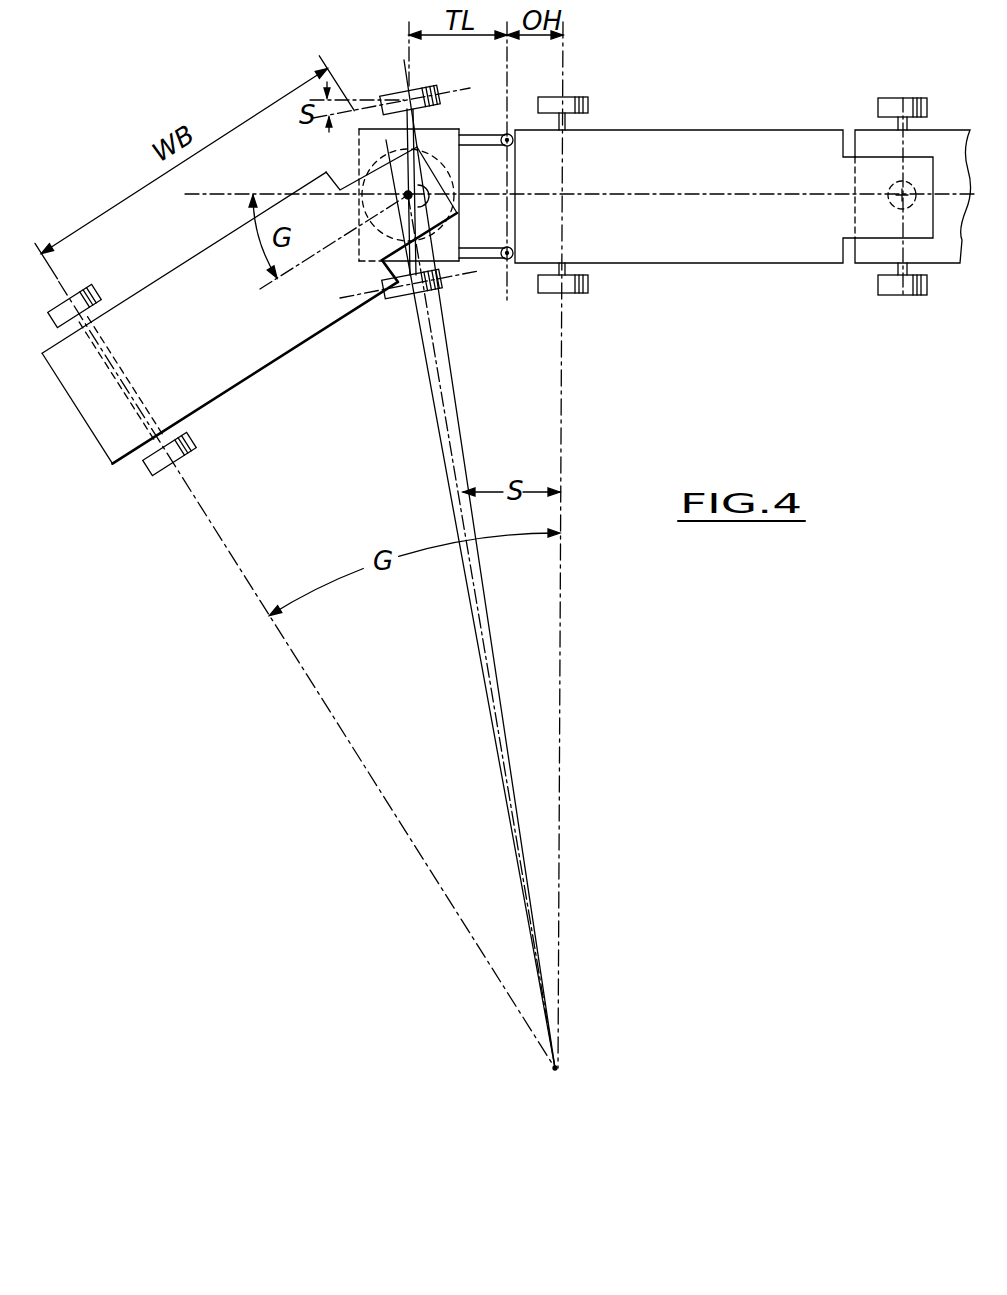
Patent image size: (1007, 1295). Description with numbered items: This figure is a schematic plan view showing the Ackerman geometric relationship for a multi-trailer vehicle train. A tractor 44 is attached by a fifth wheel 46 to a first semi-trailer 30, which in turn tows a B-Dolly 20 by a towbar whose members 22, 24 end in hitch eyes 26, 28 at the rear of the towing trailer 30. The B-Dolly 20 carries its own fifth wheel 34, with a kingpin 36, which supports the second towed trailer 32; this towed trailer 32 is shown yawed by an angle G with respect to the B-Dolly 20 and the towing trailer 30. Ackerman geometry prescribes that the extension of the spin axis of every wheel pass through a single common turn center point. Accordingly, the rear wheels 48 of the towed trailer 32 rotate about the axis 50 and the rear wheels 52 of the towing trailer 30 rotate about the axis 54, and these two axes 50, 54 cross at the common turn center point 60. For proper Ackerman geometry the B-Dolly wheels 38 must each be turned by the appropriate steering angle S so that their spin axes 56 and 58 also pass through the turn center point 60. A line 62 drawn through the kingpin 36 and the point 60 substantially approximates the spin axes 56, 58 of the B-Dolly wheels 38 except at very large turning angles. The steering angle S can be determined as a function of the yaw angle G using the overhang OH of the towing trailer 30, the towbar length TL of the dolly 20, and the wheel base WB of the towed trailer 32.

The B-Dolly 20 is at (448, 128).
The upper tongue bar 22 is at (480, 135).
The lower tongue bar 24 is at (488, 262).
The hitch eye 26 is at (503, 144).
The hitch eye 28 is at (512, 249).
The first semi-trailer 30 is at (760, 130).
The second towed trailer 32 is at (263, 370).
The fifth wheel 34 is at (457, 215).
The kingpin 36 is at (363, 172).
The B-Dolly wheels 38 is at (425, 88).
The tractor 44 is at (933, 130).
The fifth wheel 46 is at (895, 207).
The rear wheels 48 is at (85, 293).
The axis 50 is at (313, 688).
The rear wheels 52 is at (577, 96).
The axis 54 is at (565, 657).
The spin axis 56 is at (432, 383).
The spin axis 58 is at (456, 391).
The common turn center point 60 is at (555, 1068).
The line 62 is at (457, 462).